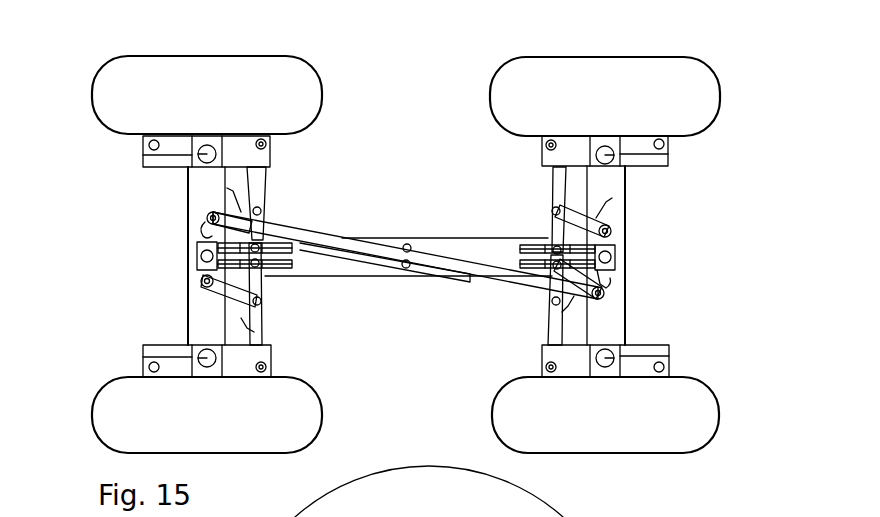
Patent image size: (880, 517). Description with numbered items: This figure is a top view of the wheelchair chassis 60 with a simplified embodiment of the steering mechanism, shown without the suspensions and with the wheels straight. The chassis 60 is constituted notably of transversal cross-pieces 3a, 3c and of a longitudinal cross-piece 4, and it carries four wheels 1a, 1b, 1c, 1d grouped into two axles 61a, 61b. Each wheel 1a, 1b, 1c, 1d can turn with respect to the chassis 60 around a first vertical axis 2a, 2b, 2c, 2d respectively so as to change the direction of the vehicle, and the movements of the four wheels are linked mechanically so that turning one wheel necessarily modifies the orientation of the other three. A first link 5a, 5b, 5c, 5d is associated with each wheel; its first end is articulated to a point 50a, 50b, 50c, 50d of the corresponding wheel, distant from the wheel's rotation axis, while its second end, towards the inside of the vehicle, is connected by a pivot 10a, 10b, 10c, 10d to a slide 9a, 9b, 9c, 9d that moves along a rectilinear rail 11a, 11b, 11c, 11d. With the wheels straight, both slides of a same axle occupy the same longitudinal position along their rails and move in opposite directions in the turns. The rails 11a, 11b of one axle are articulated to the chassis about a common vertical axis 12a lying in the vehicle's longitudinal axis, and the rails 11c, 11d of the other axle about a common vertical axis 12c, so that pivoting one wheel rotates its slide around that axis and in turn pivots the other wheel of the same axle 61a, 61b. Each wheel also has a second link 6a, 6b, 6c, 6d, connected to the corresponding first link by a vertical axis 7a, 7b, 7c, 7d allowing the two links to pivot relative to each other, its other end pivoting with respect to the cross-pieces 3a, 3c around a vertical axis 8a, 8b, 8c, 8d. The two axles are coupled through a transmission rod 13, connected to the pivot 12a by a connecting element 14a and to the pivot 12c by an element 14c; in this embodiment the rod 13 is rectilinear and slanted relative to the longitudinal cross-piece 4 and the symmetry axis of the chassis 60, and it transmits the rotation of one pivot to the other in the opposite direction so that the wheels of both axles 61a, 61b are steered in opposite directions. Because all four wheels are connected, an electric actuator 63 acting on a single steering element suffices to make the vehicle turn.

The wheel 1a is at (132, 80).
The wheel 1b is at (132, 428).
The wheel 1c is at (524, 79).
The wheel 1d is at (524, 418).
The first vertical axis 2a is at (143, 155).
The first vertical axis 2b is at (143, 357).
The first vertical axis 2c is at (668, 155).
The first vertical axis 2d is at (620, 356).
The transversal cross-piece 3a is at (208, 182).
The transversal cross-piece 3c is at (610, 180).
The longitudinal cross-piece 4 is at (440, 248).
The first link 5a is at (262, 181).
The first link 5b is at (258, 333).
The first link 5c is at (553, 178).
The first link 5d is at (553, 337).
The second link 6a is at (228, 192).
The second link 6b is at (262, 322).
The second link 6c is at (610, 203).
The second link 6d is at (572, 302).
The vertical axis 7a is at (265, 209).
The vertical axis 7b is at (263, 303).
The vertical axis 7c is at (553, 208).
The vertical axis 7d is at (550, 301).
The vertical axis 8a is at (206, 218).
The vertical axis 8b is at (204, 283).
The vertical axis 8c is at (612, 229).
The vertical axis 8d is at (606, 293).
The slide 9a is at (210, 247).
The slide 9b is at (235, 293).
The slide 9c is at (522, 245).
The slide 9d is at (535, 266).
The pivot 10a is at (290, 243).
The pivot 10b is at (292, 266).
The pivot 10c is at (553, 247).
The pivot 10d is at (552, 276).
The rectilinear rail 11a is at (322, 234).
The rectilinear rail 11b is at (322, 258).
The rectilinear rail 11c is at (502, 235).
The rectilinear rail 11d is at (493, 257).
The vertical axis 12a is at (196, 262).
The vertical axis 12c is at (615, 255).
The transmission rod 13 is at (372, 250).
The connecting element 14a is at (203, 232).
The connecting element 14c is at (606, 275).
The articulation point 50a is at (268, 145).
The articulation point 50b is at (268, 369).
The articulation point 50c is at (548, 144).
The articulation point 50d is at (545, 368).
The chassis 60 is at (389, 236).
The axle 61a is at (183, 206).
The axle 61b is at (628, 185).
The electric actuator 63 is at (407, 268).